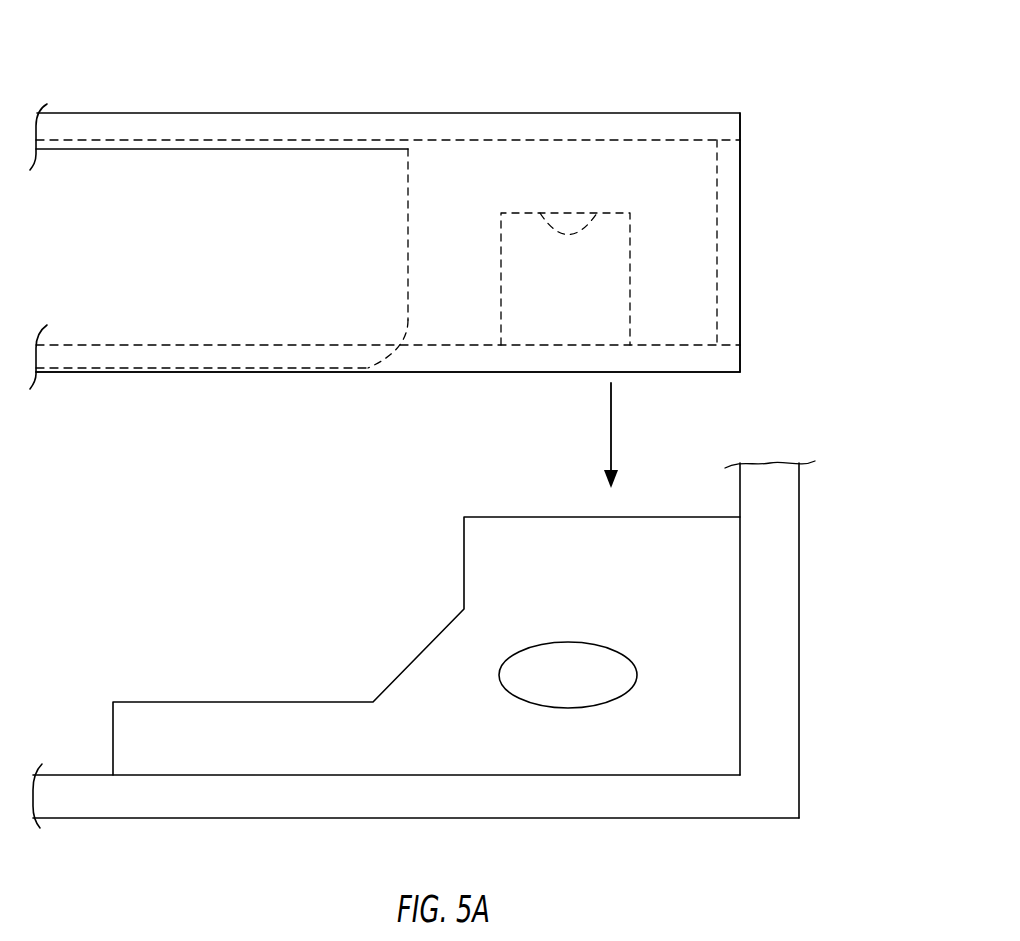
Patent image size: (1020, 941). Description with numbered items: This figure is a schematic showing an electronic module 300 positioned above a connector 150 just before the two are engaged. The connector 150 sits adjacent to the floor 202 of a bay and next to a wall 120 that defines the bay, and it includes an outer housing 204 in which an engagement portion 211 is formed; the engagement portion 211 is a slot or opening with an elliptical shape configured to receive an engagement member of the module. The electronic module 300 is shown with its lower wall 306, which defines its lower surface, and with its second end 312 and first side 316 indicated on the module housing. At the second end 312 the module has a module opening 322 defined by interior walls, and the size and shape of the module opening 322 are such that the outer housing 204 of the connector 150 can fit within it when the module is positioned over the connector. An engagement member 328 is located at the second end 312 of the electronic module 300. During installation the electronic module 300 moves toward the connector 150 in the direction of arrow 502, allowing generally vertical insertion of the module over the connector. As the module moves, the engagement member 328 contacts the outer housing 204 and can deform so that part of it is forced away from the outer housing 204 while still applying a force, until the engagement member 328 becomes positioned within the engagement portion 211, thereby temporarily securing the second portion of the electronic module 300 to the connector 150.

The electronic module 300 is at (158, 86).
The second end 312 is at (740, 160).
The module opening 322 is at (700, 220).
The first side 316 is at (686, 360).
The lower wall 306 is at (222, 375).
The engagement member 328 is at (600, 245).
The arrow 502 is at (612, 421).
The connector 150 is at (256, 626).
The floor 202 is at (118, 805).
The outer housing 204 is at (705, 588).
The wall 120 is at (780, 757).
The engagement portion 211 is at (568, 690).